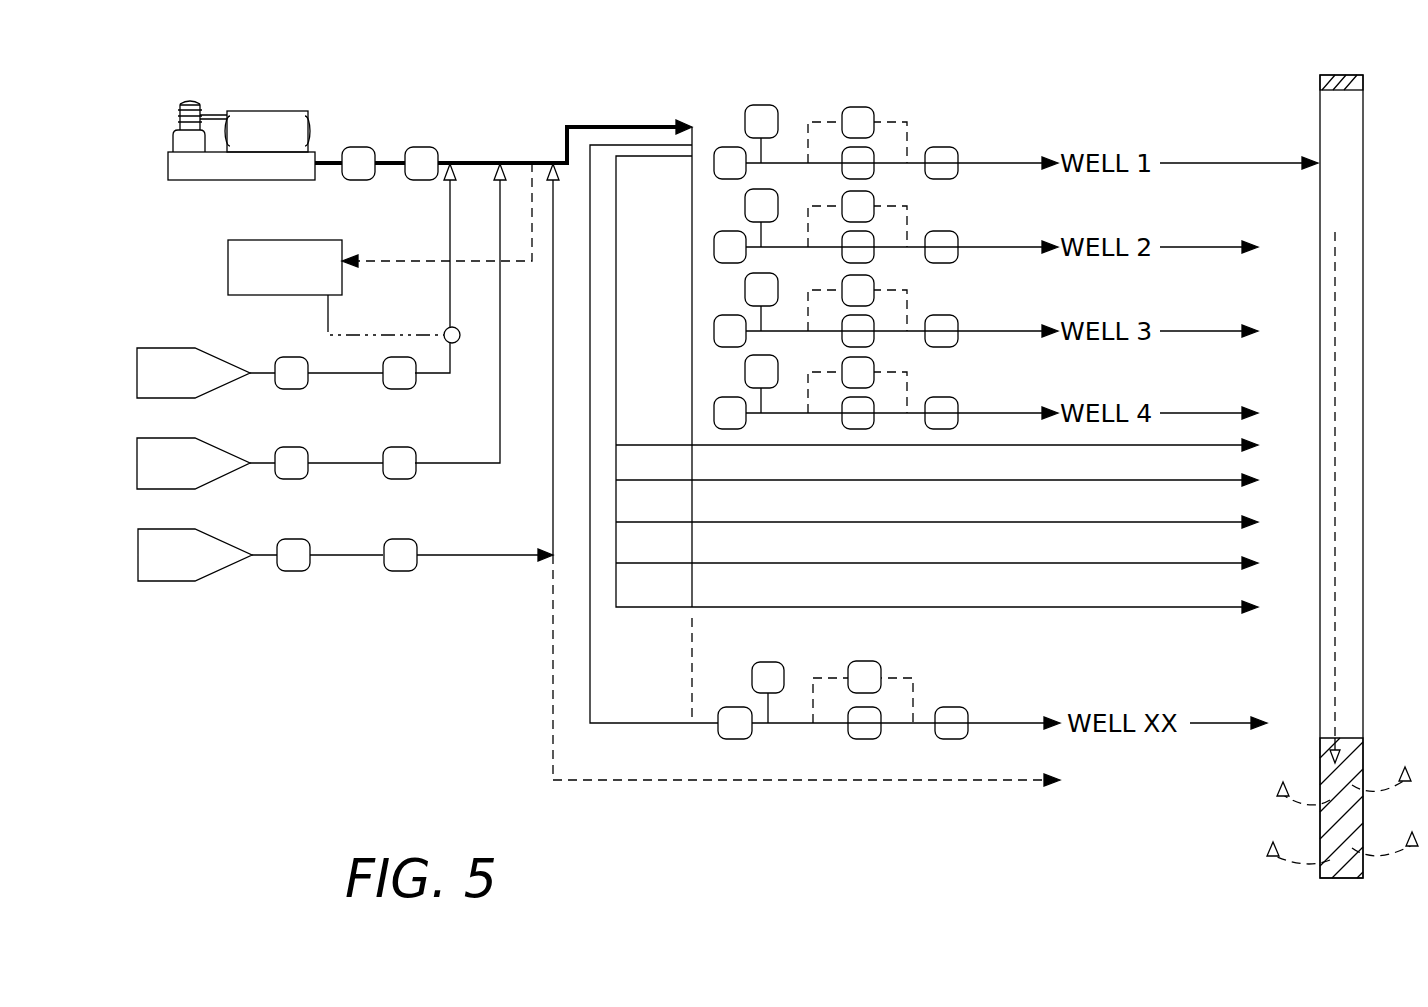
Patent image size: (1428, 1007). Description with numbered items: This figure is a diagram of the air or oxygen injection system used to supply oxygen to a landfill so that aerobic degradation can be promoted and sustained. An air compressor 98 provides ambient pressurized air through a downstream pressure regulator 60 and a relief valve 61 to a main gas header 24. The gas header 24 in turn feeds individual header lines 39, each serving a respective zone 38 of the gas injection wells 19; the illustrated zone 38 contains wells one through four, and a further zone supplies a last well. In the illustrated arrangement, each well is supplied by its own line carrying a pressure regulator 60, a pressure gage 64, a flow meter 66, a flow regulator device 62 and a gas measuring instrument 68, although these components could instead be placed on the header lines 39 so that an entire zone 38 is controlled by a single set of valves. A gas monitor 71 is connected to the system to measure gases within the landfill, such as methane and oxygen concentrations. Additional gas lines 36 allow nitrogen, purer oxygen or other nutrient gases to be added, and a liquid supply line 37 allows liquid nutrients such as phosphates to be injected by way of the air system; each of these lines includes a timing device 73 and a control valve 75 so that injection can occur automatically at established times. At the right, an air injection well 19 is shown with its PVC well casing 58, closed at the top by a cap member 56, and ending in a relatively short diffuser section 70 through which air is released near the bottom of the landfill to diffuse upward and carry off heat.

The air compressor 98 is at (283, 112).
The pressure regulator 60 is at (357, 163).
The relief valve 61 is at (424, 163).
The main gas header 24 is at (600, 128).
The gas monitor 71 is at (243, 273).
The additional gas lines 36 is at (137, 373).
The liquid supply line 37 is at (138, 555).
The timing device 73 is at (290, 380).
The control valve 75 is at (398, 380).
The header lines 39 is at (692, 312).
The pressure gage 64 is at (762, 120).
The flow meter 66 is at (857, 122).
The flow regulator device 62 is at (868, 167).
The gas measuring instrument 68 is at (942, 160).
The zones 38 is at (1186, 125).
The cap member 56 is at (1345, 80).
The air injection wells 19 is at (1348, 468).
The well casing 58 is at (1363, 560).
The diffuser section 70 is at (1345, 862).